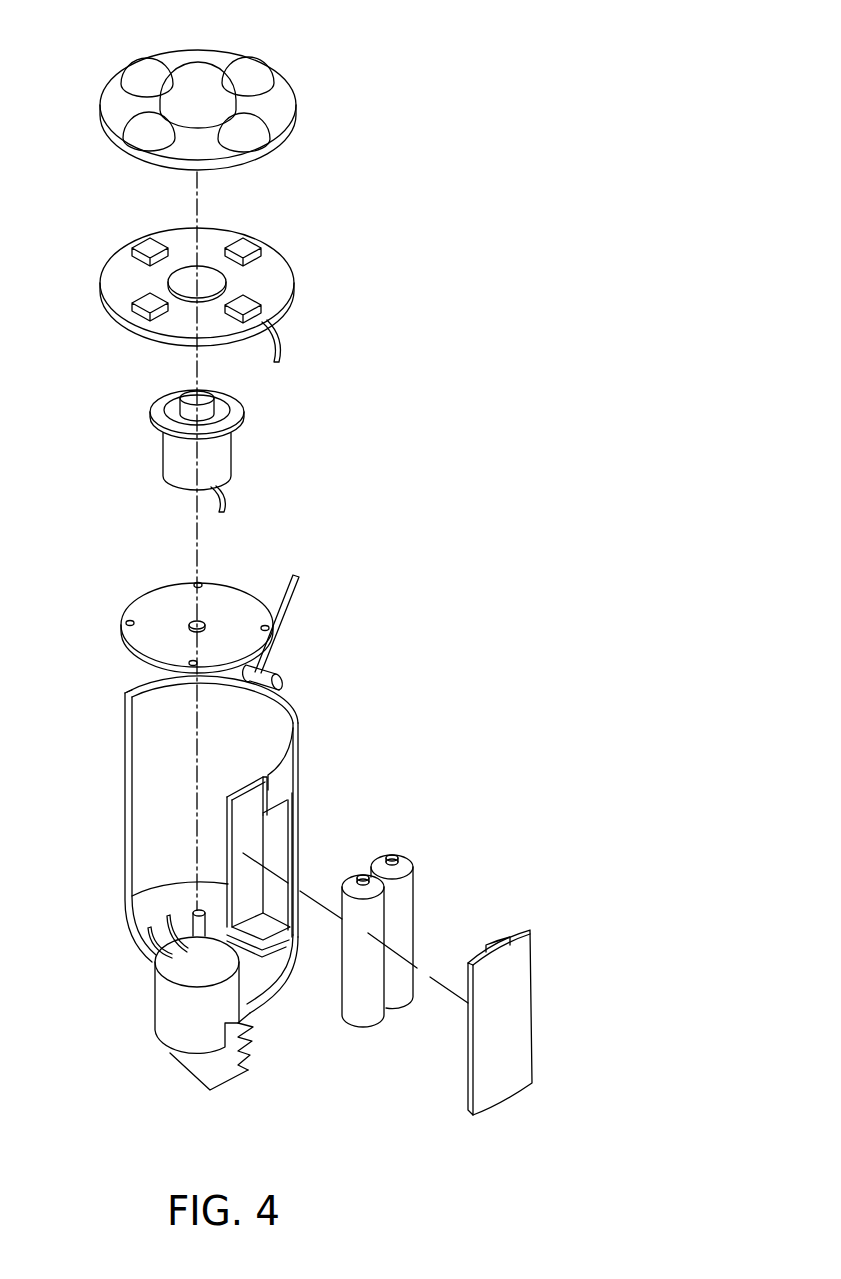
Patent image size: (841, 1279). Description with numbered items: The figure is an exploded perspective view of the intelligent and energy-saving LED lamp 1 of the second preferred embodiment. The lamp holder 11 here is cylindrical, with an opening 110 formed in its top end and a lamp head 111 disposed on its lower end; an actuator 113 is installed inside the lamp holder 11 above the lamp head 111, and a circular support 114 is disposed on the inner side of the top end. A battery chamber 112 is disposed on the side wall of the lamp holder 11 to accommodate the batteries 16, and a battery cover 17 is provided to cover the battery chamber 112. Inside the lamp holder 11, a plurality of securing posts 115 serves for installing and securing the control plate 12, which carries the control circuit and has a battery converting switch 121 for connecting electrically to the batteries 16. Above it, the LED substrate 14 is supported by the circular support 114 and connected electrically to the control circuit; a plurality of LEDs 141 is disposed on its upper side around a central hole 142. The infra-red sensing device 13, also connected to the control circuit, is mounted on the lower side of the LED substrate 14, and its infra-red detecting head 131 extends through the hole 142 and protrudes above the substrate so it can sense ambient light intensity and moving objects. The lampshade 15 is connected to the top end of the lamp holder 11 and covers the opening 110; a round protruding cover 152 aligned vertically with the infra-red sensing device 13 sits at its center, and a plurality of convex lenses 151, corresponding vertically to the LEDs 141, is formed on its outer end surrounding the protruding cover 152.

The LED lamp 1 is at (423, 622).
The lamp holder 11 is at (241, 895).
The opening 110 is at (130, 687).
The lamp head 111 is at (240, 1070).
The battery chamber 112 is at (272, 837).
The actuator 113 is at (192, 1020).
The circular support 114 is at (298, 732).
The securing posts 115 is at (198, 923).
The control plate 12 is at (263, 635).
The battery converting switch 121 is at (280, 677).
The infra-red sensing device 13 is at (128, 429).
The infra-red detecting head 131 is at (197, 402).
The LED substrate 14 is at (219, 295).
The LEDs 141 is at (243, 240).
The hole 142 is at (187, 282).
The lampshade 15 is at (271, 109).
The convex lenses 151 is at (257, 67).
The protruding cover 152 is at (210, 86).
The batteries 16 is at (402, 900).
The battery cover 17 is at (508, 993).